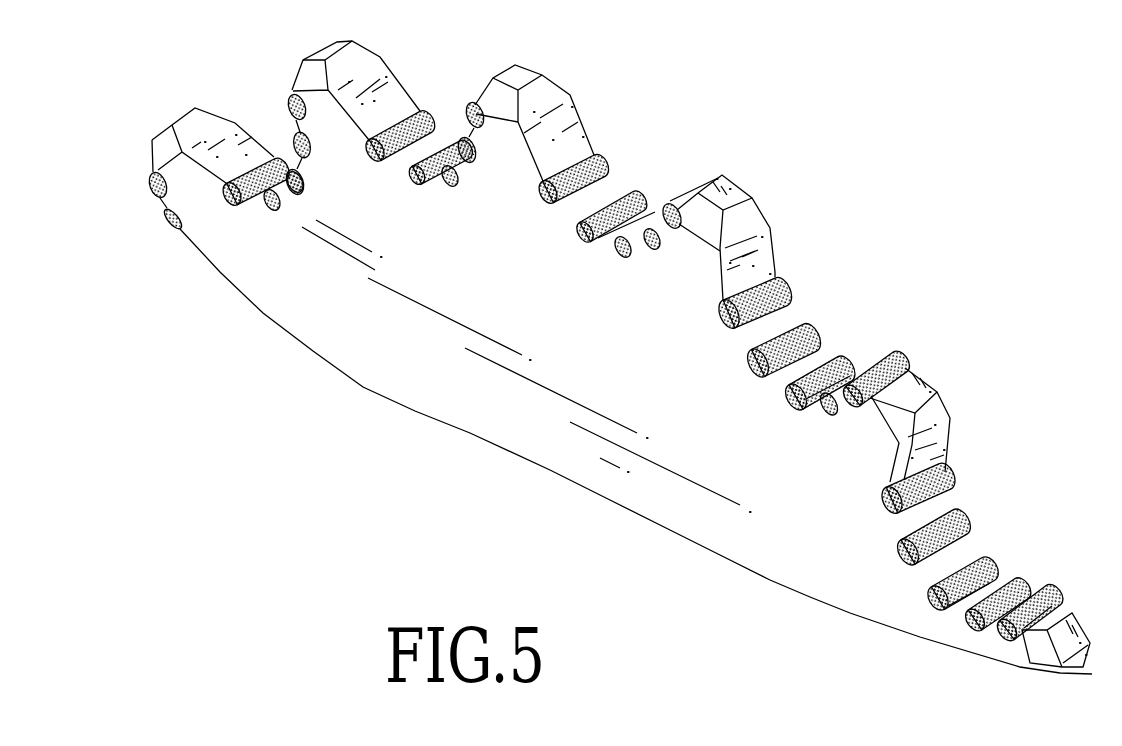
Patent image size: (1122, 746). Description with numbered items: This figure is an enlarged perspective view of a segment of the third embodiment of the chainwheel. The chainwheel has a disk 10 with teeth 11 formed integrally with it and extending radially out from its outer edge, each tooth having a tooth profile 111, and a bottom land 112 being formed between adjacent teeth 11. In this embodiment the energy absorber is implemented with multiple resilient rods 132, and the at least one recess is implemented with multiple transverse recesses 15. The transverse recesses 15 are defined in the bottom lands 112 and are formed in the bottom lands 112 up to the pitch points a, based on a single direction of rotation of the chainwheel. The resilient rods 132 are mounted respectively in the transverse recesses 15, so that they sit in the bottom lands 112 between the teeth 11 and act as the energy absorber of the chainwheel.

The disk 10 is at (497, 415).
The teeth 11 is at (791, 271).
The tooth profile 111 is at (760, 252).
The bottom land 112 is at (611, 236).
The resilient rod 132 is at (601, 212).
The transverse recess 15 is at (657, 250).
The pitch point a is at (673, 202).